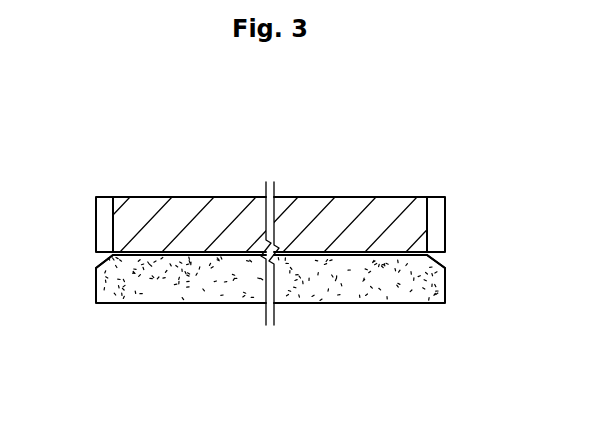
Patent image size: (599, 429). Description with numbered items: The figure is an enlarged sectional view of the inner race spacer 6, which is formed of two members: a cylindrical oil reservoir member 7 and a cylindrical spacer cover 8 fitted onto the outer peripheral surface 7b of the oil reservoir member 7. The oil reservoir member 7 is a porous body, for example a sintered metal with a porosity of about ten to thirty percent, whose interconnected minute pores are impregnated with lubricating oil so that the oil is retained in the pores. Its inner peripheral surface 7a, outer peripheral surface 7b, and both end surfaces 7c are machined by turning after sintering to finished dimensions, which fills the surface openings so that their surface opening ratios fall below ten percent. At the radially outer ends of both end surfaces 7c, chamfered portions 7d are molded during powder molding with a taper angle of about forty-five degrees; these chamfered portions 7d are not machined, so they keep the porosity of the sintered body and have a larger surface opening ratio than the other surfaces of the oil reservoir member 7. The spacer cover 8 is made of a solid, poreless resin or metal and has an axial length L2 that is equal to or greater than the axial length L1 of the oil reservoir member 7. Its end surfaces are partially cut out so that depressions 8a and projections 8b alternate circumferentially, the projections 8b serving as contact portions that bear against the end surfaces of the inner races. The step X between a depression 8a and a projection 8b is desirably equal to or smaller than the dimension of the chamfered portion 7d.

The inner race spacer 6 is at (447, 173).
The oil reservoir member 7 is at (348, 304).
The inner peripheral surface 7a is at (217, 303).
The outer peripheral surface 7b is at (197, 252).
The end surfaces 7c is at (96, 291).
The chamfered portions 7d is at (104, 259).
The spacer cover 8 is at (349, 197).
The depressions 8a is at (112, 210).
The projections 8b is at (96, 238).
The axial length of the oil reservoir member L1 is at (445, 375).
The axial length of the spacer cover L2 is at (445, 382).
The step X is at (113, 158).